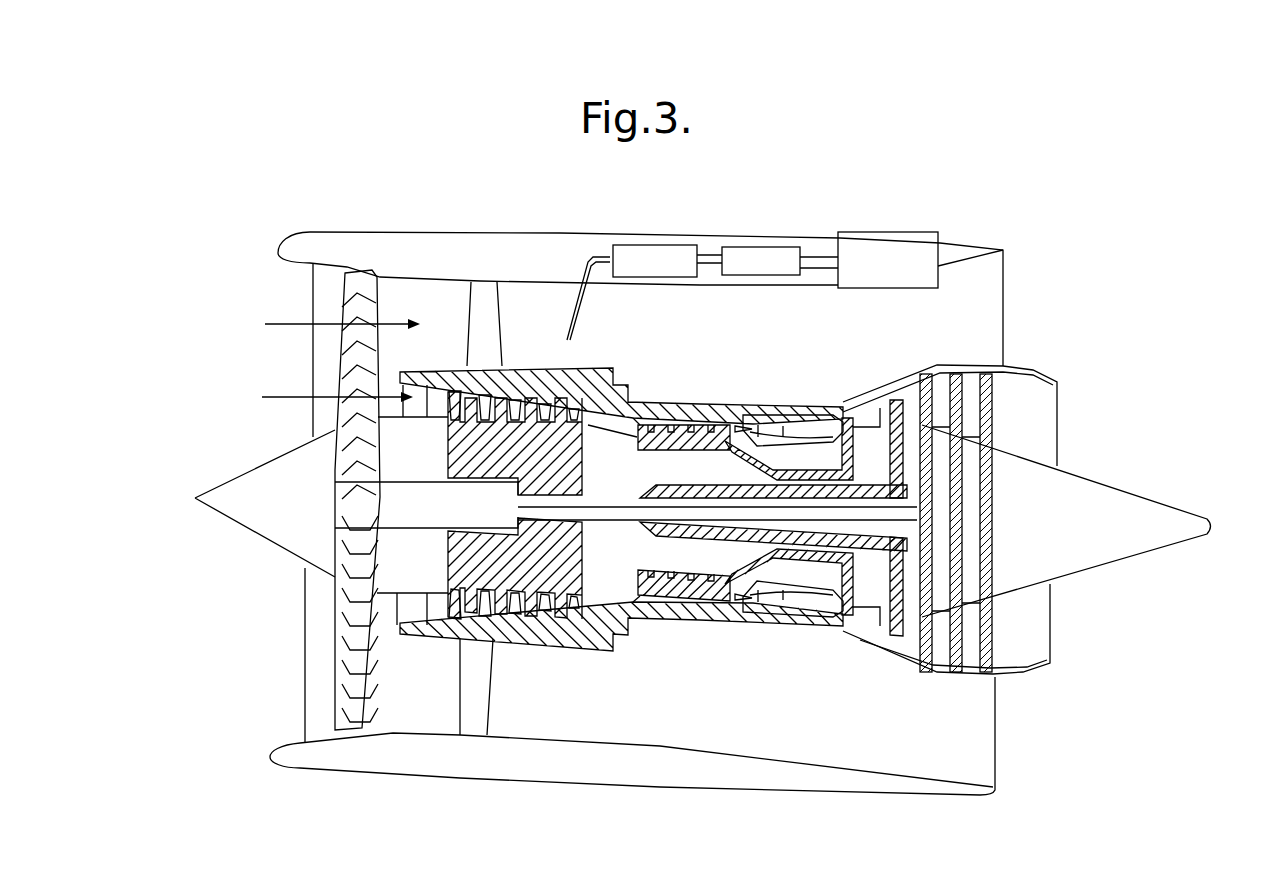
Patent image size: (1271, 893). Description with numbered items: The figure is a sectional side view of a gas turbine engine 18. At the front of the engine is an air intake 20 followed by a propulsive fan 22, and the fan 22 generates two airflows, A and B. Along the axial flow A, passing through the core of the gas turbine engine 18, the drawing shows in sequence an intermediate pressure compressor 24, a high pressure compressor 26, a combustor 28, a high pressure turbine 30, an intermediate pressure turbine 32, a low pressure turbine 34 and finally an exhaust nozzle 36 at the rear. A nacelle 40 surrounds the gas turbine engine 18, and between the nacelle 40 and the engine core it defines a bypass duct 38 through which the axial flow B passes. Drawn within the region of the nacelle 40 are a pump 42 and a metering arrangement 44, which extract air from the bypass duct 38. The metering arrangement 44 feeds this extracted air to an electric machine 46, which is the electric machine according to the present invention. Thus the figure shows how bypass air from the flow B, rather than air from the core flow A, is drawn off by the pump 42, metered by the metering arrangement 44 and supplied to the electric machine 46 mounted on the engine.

The gas turbine engine 18 is at (1160, 323).
The air intake 20 is at (392, 369).
The propulsive fan 22 is at (362, 278).
The intermediate pressure compressor 24 is at (575, 460).
The high pressure compressor 26 is at (715, 423).
The combustor 28 is at (800, 427).
The high pressure turbine 30 is at (853, 407).
The intermediate pressure turbine 32 is at (918, 395).
The low pressure turbine 34 is at (962, 380).
The exhaust nozzle 36 is at (1095, 477).
The bypass duct 38 is at (774, 330).
The nacelle 40 is at (462, 270).
The pump 42 is at (662, 244).
The metering arrangement 44 is at (762, 246).
The electric machine 46 is at (900, 231).
The airflow A is at (328, 396).
The airflow B is at (331, 325).